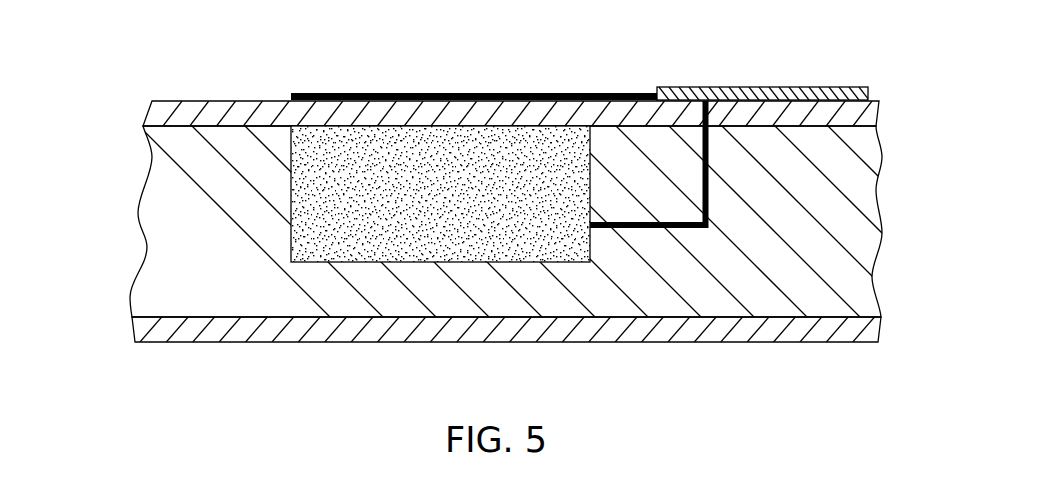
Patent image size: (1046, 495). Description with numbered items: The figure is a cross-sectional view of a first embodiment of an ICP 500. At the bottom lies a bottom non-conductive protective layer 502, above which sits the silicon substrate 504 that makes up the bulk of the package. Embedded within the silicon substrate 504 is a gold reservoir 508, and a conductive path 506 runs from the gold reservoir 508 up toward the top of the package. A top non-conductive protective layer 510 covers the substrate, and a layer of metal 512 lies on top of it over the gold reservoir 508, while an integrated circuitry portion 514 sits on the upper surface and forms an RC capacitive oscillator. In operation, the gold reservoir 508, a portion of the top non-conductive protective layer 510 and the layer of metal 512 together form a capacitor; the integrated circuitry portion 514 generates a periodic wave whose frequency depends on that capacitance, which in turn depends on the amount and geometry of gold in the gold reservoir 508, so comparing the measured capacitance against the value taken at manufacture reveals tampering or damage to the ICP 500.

The ICP 500 is at (942, 26).
The bottom non-conductive protective layer 502 is at (754, 342).
The silicon substrate 504 is at (157, 287).
The conductive path 506 is at (647, 230).
The gold reservoir 508 is at (433, 262).
The top non-conductive protective layer 510 is at (874, 104).
The layer of metal 512 is at (494, 93).
The integrated circuitry portion 514 is at (756, 87).